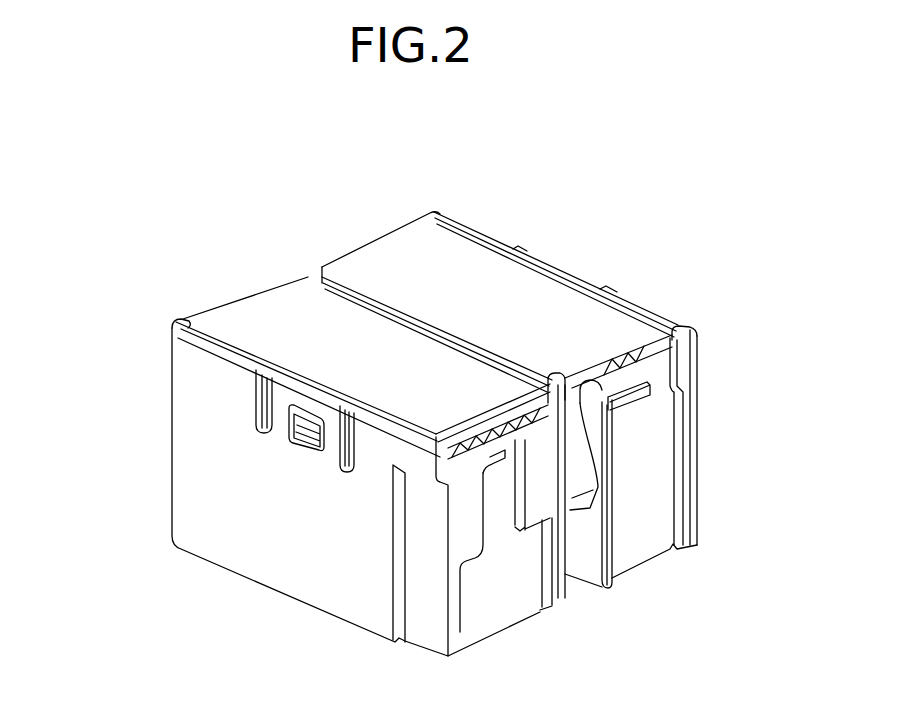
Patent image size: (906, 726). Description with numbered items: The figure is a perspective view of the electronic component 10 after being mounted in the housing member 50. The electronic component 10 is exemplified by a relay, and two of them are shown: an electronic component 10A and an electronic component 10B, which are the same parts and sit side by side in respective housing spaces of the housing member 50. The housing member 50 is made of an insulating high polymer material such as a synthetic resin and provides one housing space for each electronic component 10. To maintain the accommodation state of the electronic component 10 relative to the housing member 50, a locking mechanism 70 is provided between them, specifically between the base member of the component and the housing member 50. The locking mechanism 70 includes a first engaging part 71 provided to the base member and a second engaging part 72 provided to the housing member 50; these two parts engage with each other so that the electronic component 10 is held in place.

The electronic component 10 is at (434, 402).
The electronic component 10A is at (263, 320).
The electronic component 10B is at (387, 258).
The housing member 50 is at (690, 440).
The locking mechanism 70 is at (92, 453).
The first engaging part 71 is at (293, 438).
The second engaging part 72 is at (293, 448).